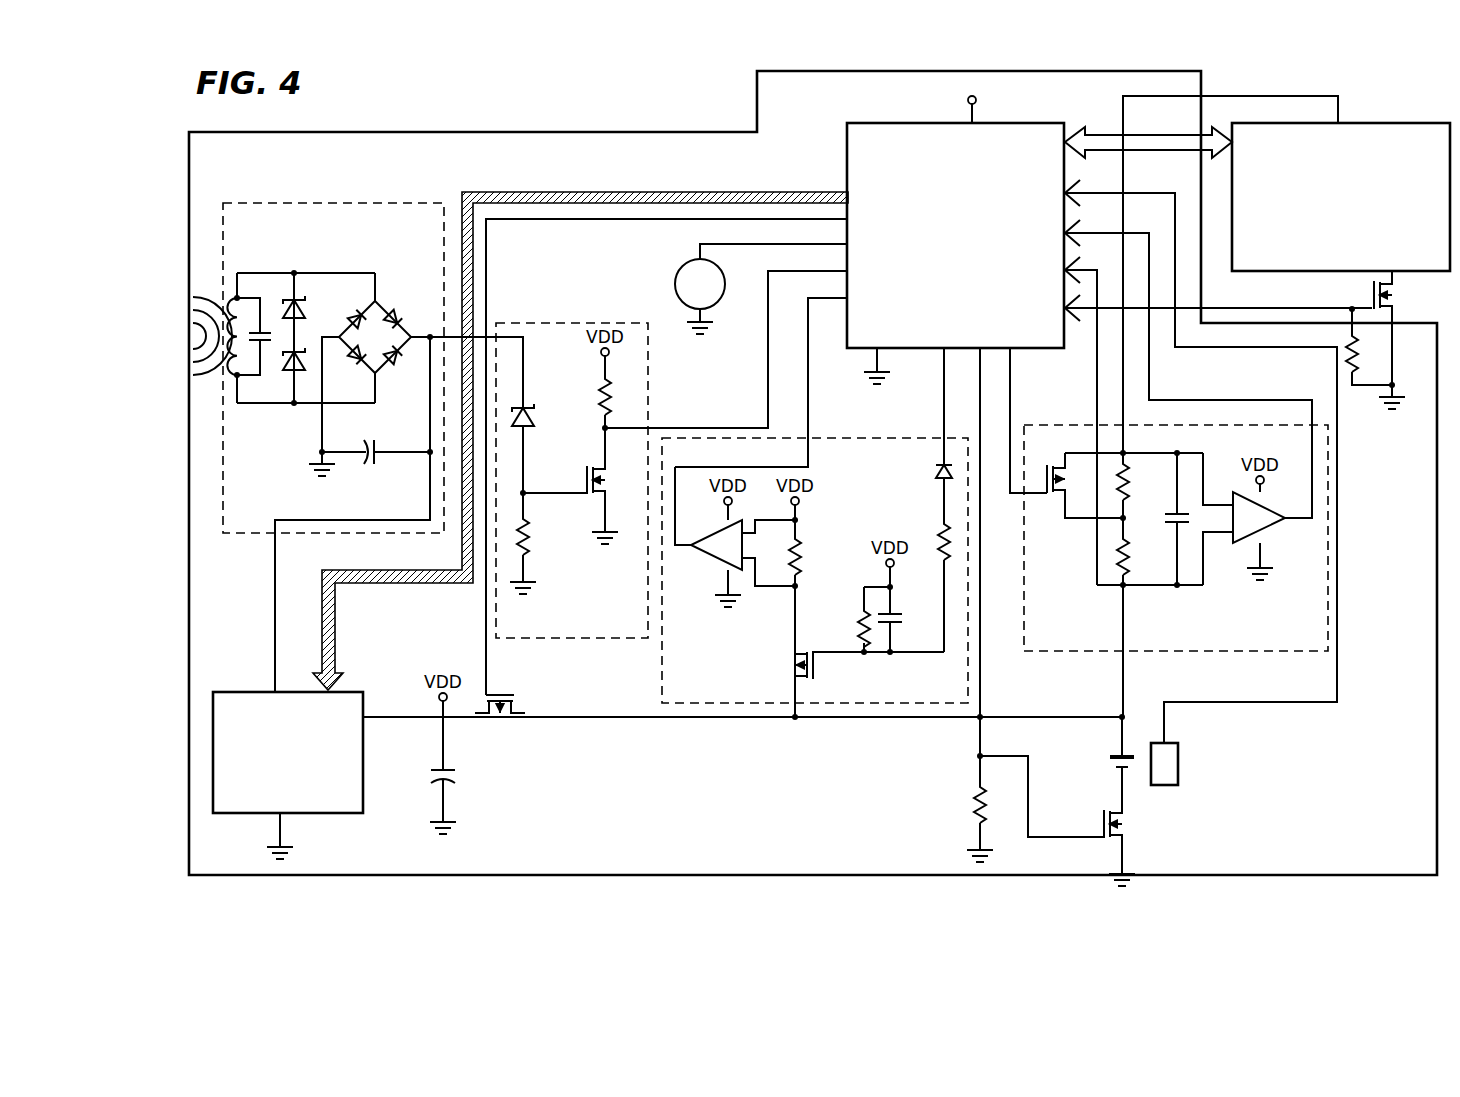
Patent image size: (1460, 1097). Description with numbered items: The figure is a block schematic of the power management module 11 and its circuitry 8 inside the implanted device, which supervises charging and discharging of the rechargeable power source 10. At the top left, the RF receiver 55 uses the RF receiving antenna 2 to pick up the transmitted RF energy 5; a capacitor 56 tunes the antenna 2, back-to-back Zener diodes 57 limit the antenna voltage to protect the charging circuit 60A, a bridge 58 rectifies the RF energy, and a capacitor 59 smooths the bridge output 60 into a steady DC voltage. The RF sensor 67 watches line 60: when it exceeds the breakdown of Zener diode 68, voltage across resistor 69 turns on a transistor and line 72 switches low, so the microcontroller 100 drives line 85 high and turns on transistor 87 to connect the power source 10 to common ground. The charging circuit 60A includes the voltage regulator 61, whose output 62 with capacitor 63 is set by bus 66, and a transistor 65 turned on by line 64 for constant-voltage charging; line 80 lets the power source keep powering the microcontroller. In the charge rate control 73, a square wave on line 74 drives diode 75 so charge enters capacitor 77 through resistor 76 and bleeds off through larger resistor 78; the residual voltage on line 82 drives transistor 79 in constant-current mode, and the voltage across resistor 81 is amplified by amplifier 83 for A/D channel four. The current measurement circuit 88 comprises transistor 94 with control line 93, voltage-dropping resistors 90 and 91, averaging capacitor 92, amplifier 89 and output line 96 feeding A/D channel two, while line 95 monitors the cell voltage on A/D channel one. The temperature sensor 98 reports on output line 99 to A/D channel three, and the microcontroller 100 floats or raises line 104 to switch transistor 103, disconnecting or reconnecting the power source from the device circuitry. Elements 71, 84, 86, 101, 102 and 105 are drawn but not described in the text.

The RF receiving antenna 2 is at (244, 354).
The transmitted RF energy 5 is at (199, 384).
The circuitry of the implantable medical device 8 is at (1403, 123).
The rechargeable power source 10 is at (1107, 761).
The power management module 11 is at (680, 132).
The RF receiver 55 is at (240, 535).
The capacitor 56 is at (268, 342).
The back-to-back Zener diodes 57 is at (300, 343).
The bridge 58 is at (411, 314).
The capacitor 59 is at (378, 444).
The output line of the bridge 60 is at (272, 604).
The charging circuit 60A is at (541, 794).
The voltage regulator 61 is at (243, 692).
The output of the voltage regulator 62 is at (400, 715).
The capacitor 63 is at (437, 770).
The line 64 is at (486, 622).
The transistor 65 is at (498, 724).
The bus 66 is at (402, 583).
The RF sensor 67 is at (560, 640).
The Zener diode 68 is at (533, 415).
The resistor 69 is at (532, 540).
The pull-up resistor 71 is at (613, 398).
The line 72 is at (766, 365).
The charge rate control 73 is at (660, 690).
The line 74 is at (943, 390).
The diode 75 is at (936, 470).
The resistor 76 is at (940, 528).
The capacitor 77 is at (897, 614).
The resistor 78 is at (588, 462).
The transistor 79 is at (833, 673).
The line 80 is at (836, 722).
The resistor 81 is at (803, 545).
The line 82 is at (922, 655).
The amplifier 83 is at (708, 556).
The A/D 4 signal line 84 is at (810, 398).
The line 85 is at (972, 720).
The resistor 86 is at (972, 800).
The transistor 87 is at (1131, 826).
The current measurement circuit 88 is at (1268, 652).
The amplifier 89 is at (1272, 530).
The voltage-dropping resistor 90 is at (1130, 560).
The voltage-dropping resistor 91 is at (1130, 492).
The averaging capacitor 92 is at (1173, 510).
The control line 93 is at (1012, 363).
The transistor 94 is at (1057, 500).
The line 95 is at (1096, 395).
The output line 96 is at (1192, 398).
The temperature sensor 98 is at (1182, 752).
The output line 99 is at (1338, 667).
The microcontroller 100 is at (1024, 123).
The data bus 101 is at (1150, 150).
The cell supply line 102 is at (1232, 96).
The transistor 103 is at (1398, 287).
The line 104 is at (676, 276).
The reference line / resistor 105 is at (762, 244).